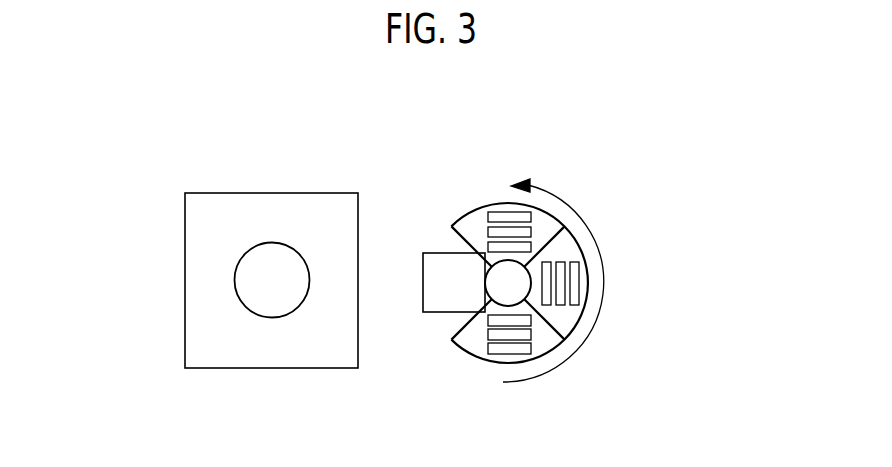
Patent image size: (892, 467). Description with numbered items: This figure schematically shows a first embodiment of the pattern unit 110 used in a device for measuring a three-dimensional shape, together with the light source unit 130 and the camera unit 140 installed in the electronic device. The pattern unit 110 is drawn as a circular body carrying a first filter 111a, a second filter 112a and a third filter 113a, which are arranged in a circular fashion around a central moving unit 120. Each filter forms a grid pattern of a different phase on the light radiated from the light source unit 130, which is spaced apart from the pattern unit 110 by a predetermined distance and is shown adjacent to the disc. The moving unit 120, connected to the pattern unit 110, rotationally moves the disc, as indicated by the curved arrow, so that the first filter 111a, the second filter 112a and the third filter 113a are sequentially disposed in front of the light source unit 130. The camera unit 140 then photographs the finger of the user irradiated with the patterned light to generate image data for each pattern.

The pattern unit 110 is at (625, 282).
The first filter 111a is at (547, 208).
The second filter 112a is at (588, 282).
The third filter 113a is at (605, 341).
The moving unit 120 is at (497, 300).
The light source unit 130 is at (437, 252).
The camera unit 140 is at (185, 279).